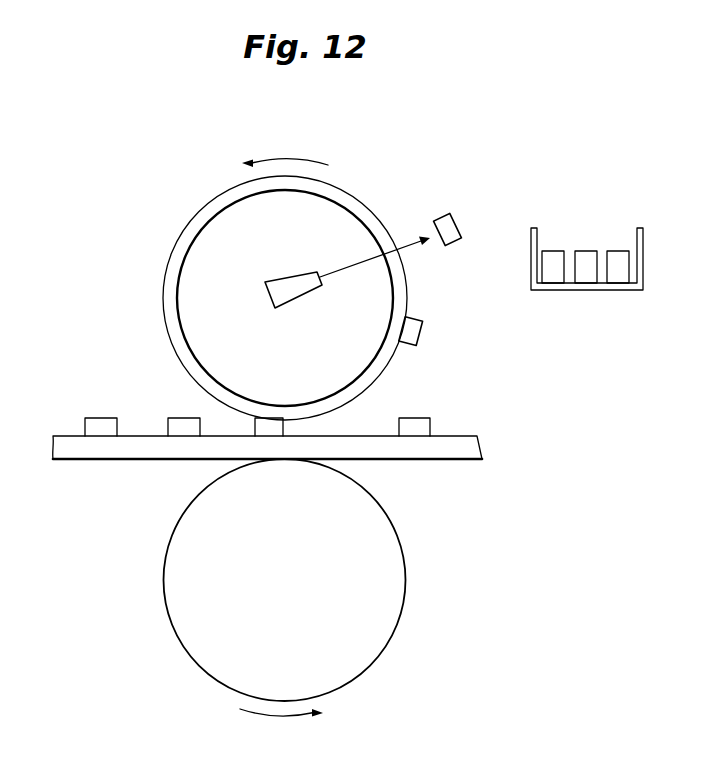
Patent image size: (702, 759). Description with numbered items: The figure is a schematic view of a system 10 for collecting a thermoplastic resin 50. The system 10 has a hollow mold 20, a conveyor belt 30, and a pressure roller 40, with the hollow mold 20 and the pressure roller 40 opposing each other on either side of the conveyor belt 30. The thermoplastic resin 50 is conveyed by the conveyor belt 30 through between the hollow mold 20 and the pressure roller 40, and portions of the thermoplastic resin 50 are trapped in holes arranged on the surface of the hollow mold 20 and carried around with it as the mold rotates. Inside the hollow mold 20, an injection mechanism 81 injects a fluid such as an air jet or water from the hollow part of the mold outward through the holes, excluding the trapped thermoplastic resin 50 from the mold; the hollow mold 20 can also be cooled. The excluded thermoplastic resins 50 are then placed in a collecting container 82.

The system 10 is at (103, 197).
The hollow mold 20 is at (337, 198).
The conveyor belt 30 is at (460, 436).
The pressure roller 40 is at (392, 578).
The thermoplastic resin 50 is at (100, 417).
The injection mechanism 81 is at (282, 277).
The collecting container 82 is at (645, 254).